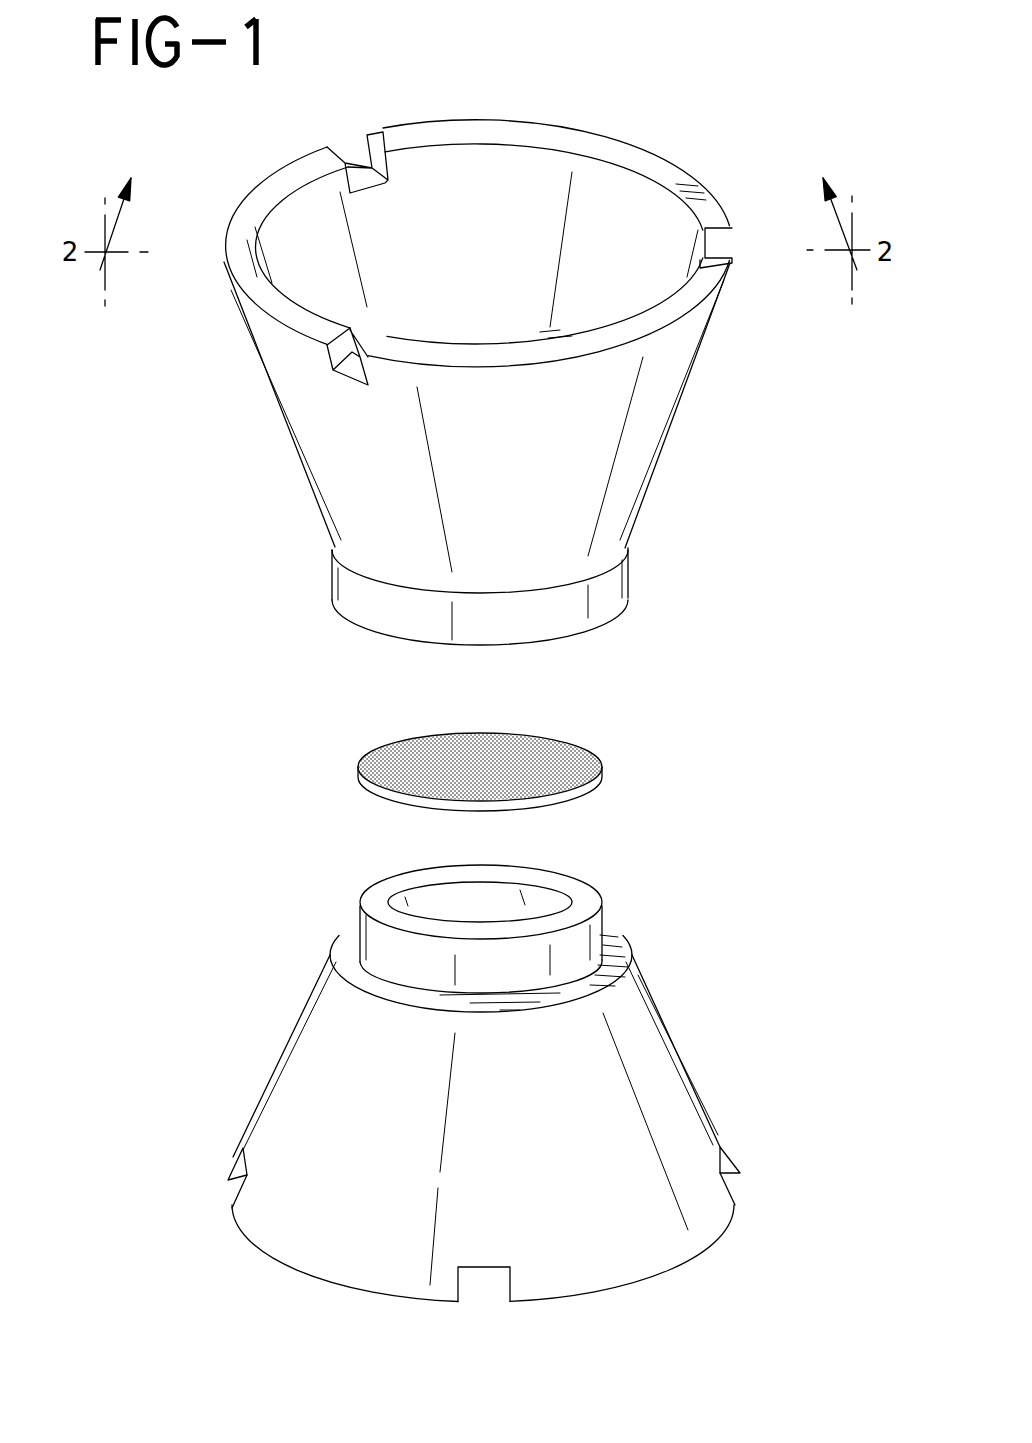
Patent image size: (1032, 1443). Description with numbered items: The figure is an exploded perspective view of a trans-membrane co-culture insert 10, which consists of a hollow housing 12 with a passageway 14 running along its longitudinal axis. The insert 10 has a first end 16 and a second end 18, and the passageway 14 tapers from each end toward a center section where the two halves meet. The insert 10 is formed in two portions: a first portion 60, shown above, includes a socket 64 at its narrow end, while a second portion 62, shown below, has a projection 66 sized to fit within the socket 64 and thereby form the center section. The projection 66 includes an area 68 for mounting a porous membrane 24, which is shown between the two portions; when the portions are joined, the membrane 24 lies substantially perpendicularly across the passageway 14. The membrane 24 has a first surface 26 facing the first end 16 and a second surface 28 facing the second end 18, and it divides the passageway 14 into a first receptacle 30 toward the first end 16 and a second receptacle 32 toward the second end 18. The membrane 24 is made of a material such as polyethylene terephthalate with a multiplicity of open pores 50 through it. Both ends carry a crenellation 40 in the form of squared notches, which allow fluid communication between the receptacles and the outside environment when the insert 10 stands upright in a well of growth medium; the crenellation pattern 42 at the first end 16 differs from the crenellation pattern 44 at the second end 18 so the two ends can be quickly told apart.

The trans-membrane co-culture insert 10 is at (253, 725).
The hollow housing 12 is at (675, 173).
The passageway 14 is at (543, 223).
The first end 16 is at (260, 198).
The second end 18 is at (228, 1158).
The porous membrane 24 is at (603, 772).
The first surface 26 is at (390, 757).
The second surface 28 is at (392, 800).
The first receptacle 30 is at (475, 178).
The second receptacle 32 is at (505, 898).
The crenellation 40 is at (372, 170).
The crenellation pattern 42 is at (356, 367).
The crenellation pattern 44 is at (742, 1173).
The pores 50 is at (570, 757).
The first portion 60 is at (660, 428).
The second portion 62 is at (683, 1062).
The socket 64 is at (617, 617).
The projection 66 is at (377, 940).
The area 68 is at (600, 895).